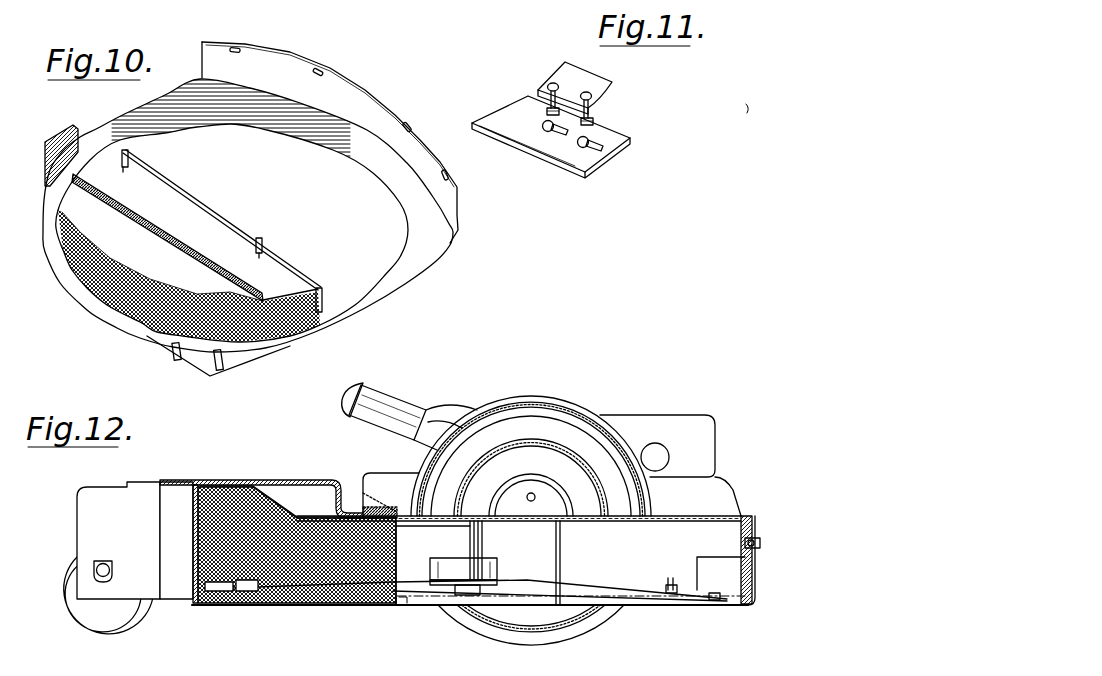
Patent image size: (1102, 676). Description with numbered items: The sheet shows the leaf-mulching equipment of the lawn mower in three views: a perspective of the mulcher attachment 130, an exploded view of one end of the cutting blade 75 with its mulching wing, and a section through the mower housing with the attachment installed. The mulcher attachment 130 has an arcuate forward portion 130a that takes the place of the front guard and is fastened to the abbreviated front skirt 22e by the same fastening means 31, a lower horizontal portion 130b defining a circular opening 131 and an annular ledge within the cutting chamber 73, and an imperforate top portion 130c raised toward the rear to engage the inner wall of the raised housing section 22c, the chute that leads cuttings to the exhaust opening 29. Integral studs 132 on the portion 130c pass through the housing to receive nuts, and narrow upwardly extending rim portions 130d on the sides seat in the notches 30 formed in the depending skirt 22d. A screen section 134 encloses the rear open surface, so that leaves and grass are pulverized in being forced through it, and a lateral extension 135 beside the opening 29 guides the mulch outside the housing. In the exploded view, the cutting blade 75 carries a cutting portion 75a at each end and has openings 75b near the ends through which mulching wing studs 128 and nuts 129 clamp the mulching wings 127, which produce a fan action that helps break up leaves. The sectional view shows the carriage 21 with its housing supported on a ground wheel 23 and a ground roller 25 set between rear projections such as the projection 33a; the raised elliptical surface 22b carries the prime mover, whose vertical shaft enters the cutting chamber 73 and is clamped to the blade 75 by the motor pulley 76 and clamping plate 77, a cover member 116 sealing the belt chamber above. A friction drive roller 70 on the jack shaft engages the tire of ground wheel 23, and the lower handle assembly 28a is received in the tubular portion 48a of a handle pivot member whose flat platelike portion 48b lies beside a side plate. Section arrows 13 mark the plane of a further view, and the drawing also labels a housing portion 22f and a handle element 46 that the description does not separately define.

In FIG. 10, the mulcher attachment 130 is at (460, 240).
In FIG. 12, the mulcher attachment 130 is at (752, 606).
In FIG. 10, the arcuate forward portion 130a is at (365, 102).
In FIG. 10, the lower horizontal portion 130b is at (272, 122).
In FIG. 10, the imperforate top portion 130c is at (204, 210).
In FIG. 12, the imperforate top portion 130c is at (242, 485).
In FIG. 10, the upwardly extending rim portion 130d is at (80, 128).
In FIG. 12, the upwardly extending rim portion 130d is at (399, 605).
In FIG. 10, the circular opening 131 is at (350, 160).
In FIG. 10, the integral studs 132 is at (130, 155).
In FIG. 12, the integral studs 132 is at (385, 506).
In FIG. 10, the screen section 134 is at (96, 288).
In FIG. 12, the screen section 134 is at (193, 520).
In FIG. 10, the lateral extension 135 is at (206, 375).
In FIG. 12, the lateral extension 135 is at (433, 562).
In FIG. 11, the mulching wings 127 is at (568, 77).
In FIG. 12, the mulching wings 127 is at (227, 600).
In FIG. 11, the mulching wing studs 128 is at (588, 94).
In FIG. 12, the mulching wing studs 128 is at (640, 602).
In FIG. 11, the nuts 129 is at (547, 111).
In FIG. 12, the nuts 129 is at (682, 601).
In FIG. 11, the cutting blade 75 is at (622, 157).
In FIG. 12, the cutting blade 75 is at (570, 582).
In FIG. 11, the cutting portion 75a is at (572, 163).
In FIG. 11, the openings 75b is at (548, 130).
In FIG. 12, the section line 13 is at (215, 481).
In FIG. 12, the carriage 21 is at (167, 602).
In FIG. 12, the raised elliptical flat surface 22b is at (720, 477).
In FIG. 12, the raised section 22c is at (330, 480).
In FIG. 12, the depending skirt 22d is at (627, 606).
In FIG. 12, the abbreviated depending skirt 22e is at (742, 531).
In FIG. 12, the motor housing 22f is at (670, 420).
In FIG. 12, the ground wheel 23 is at (522, 410).
In FIG. 12, the ground roller 25 is at (66, 591).
In FIG. 12, the lower handle assembly 28a is at (362, 384).
In FIG. 12, the exhaust opening 29 is at (334, 482).
In FIG. 12, the notch 30 is at (403, 603).
In FIG. 12, the fastening means 31 is at (757, 549).
In FIG. 12, the projection 33a is at (87, 524).
In FIG. 12, the arm 46 is at (433, 411).
In FIG. 12, the tubular portion 48a is at (394, 400).
In FIG. 12, the flat platelike portion 48b is at (448, 417).
In FIG. 12, the friction drive roller 70 is at (660, 455).
In FIG. 12, the cutting chamber 73 is at (636, 576).
In FIG. 12, the motor pulley 76 is at (483, 534).
In FIG. 12, the clamping plate 77 is at (498, 565).
In FIG. 12, the cover member 116 is at (573, 526).